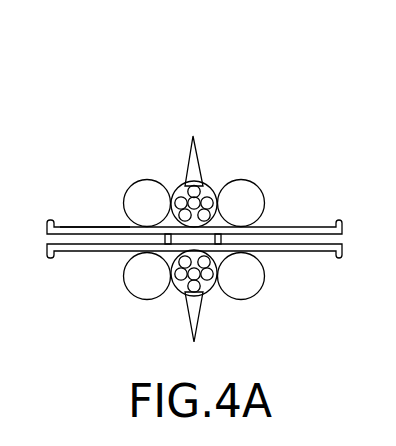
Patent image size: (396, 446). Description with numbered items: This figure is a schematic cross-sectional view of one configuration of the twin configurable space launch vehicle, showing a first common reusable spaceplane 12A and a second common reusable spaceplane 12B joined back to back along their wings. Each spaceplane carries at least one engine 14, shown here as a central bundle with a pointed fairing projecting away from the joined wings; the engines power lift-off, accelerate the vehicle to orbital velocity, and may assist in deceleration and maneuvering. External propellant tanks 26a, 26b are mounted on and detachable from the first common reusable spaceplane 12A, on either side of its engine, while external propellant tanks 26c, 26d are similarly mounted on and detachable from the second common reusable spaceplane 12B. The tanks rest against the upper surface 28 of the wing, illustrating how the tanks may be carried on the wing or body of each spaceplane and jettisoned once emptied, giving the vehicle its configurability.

The first common reusable spaceplane 12A is at (298, 226).
The second common reusable spaceplane 12B is at (72, 253).
The engine 14 is at (200, 183).
The external propellant tank 26a is at (262, 180).
The external propellant tank 26b is at (143, 179).
The external propellant tank 26c is at (155, 299).
The external propellant tank 26d is at (258, 283).
The upper surface of wing 28 is at (97, 227).